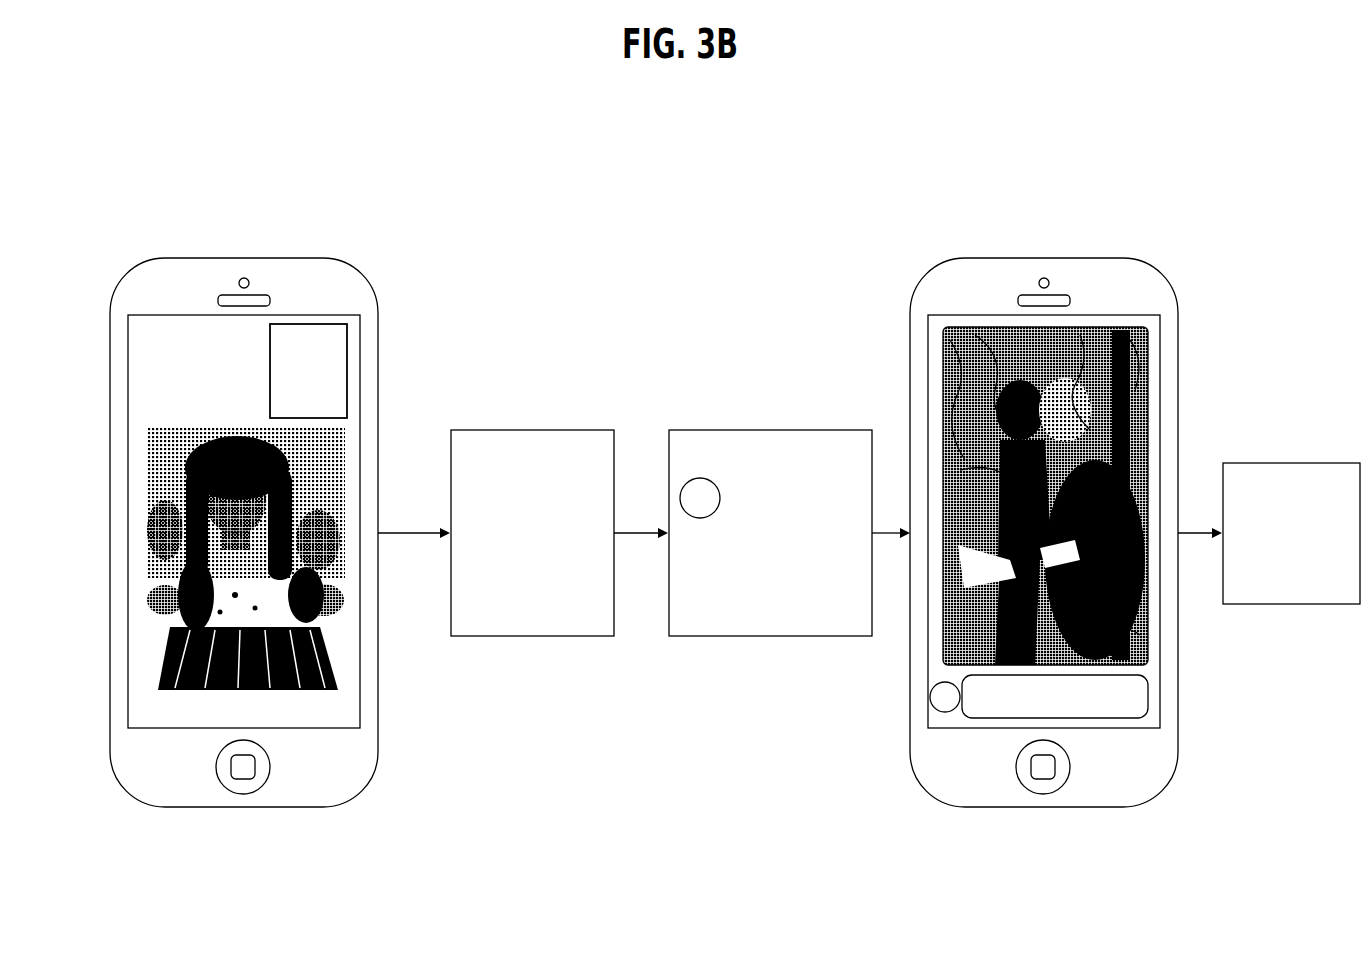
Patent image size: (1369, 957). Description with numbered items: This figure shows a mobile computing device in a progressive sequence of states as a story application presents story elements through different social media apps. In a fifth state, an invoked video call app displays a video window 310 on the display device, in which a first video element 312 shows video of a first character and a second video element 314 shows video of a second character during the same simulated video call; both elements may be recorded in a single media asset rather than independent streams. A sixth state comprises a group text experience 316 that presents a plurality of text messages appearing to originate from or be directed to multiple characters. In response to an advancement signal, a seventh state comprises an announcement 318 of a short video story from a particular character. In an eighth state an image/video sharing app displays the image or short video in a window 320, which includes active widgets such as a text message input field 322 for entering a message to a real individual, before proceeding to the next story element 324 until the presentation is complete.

The video window 310 is at (234, 535).
The first video element 312 is at (326, 382).
The second video element 314 is at (300, 697).
The group text experience 316 is at (496, 528).
The announcement 318 is at (713, 421).
The window 320 is at (1034, 535).
The text message input field 322 is at (1101, 730).
The next story element until complete 324 is at (1284, 495).